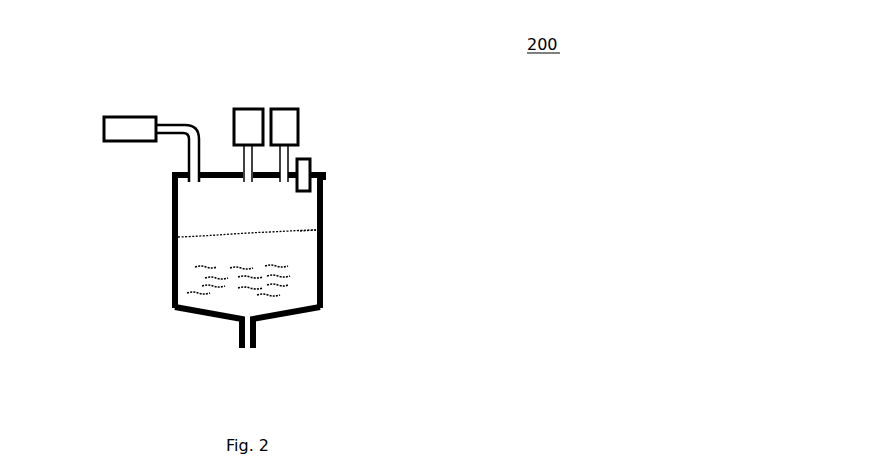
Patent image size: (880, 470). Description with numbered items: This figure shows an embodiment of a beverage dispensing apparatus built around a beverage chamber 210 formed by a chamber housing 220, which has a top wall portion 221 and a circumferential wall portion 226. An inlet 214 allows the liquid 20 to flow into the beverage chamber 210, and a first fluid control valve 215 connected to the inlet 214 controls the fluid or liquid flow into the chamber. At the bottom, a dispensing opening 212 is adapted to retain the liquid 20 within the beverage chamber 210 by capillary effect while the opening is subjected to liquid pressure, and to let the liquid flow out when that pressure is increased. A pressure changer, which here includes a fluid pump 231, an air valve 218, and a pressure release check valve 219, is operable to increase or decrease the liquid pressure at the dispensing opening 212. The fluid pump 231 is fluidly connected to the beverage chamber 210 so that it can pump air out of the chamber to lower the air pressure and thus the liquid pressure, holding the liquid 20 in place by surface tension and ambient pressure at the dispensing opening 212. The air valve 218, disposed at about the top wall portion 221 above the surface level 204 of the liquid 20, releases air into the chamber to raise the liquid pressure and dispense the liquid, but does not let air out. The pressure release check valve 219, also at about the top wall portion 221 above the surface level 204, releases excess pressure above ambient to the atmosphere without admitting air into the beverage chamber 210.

The liquid 20 is at (187, 278).
The surface level 204 is at (193, 236).
The beverage chamber 210 is at (323, 193).
The dispensing opening 212 is at (254, 330).
The inlet 214 is at (237, 170).
The first fluid control valve 215 is at (250, 118).
The air valve 218 is at (290, 123).
The pressure release check valve 219 is at (305, 167).
The chamber housing 220 is at (160, 186).
The top wall portion 221 is at (320, 170).
The circumferential wall portion 226 is at (324, 228).
The fluid pump 231 is at (112, 130).